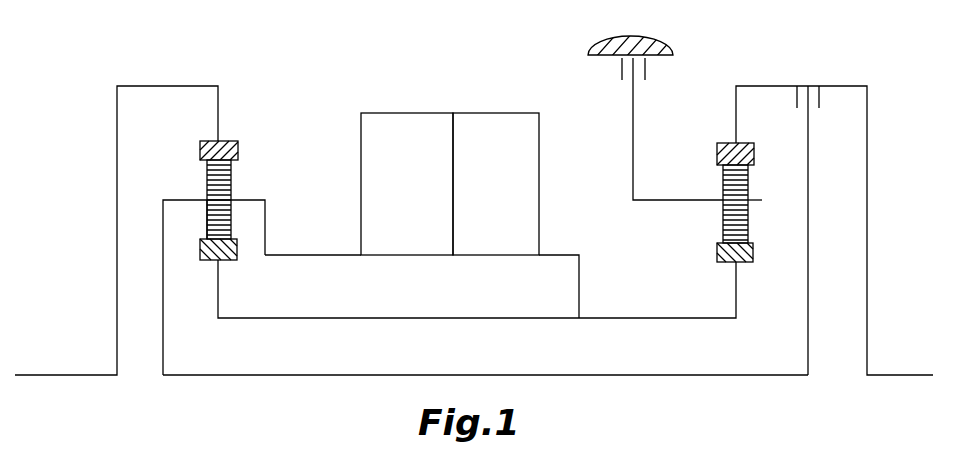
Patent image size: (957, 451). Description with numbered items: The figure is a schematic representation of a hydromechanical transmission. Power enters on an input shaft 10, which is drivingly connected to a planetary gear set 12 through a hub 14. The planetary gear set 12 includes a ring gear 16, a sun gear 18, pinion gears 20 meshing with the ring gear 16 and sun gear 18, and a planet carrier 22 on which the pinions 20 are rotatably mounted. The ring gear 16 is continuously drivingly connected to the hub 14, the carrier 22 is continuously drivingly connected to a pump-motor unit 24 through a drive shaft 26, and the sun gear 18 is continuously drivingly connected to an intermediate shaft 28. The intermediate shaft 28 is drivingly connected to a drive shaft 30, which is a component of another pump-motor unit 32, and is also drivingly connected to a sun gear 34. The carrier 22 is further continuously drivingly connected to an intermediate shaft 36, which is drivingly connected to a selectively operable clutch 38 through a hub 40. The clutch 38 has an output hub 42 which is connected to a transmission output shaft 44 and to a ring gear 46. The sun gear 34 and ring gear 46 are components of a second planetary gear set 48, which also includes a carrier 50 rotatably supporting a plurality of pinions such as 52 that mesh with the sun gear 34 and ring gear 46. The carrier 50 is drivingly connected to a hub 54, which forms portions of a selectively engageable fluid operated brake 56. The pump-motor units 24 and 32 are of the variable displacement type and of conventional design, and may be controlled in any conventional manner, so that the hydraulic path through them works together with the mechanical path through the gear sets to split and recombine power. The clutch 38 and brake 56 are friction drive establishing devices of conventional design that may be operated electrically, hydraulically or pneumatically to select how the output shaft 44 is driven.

The input shaft 10 is at (108, 378).
The planetary gear set 12 is at (239, 190).
The hub 14 is at (117, 148).
The ring gear 16 is at (238, 146).
The sun gear 18 is at (232, 250).
The pinion gears 20 is at (207, 210).
The planet carrier 22 is at (163, 226).
The pump-motor unit 24 is at (386, 124).
The drive shaft 26 is at (343, 255).
The intermediate shaft 28 is at (375, 319).
The drive shaft 30 is at (557, 255).
The pump-motor unit 32 is at (496, 126).
The sun gear 34 is at (718, 256).
The intermediate shaft 36 is at (268, 378).
The clutch 38 is at (831, 110).
The hub 40 is at (808, 286).
The output hub 42 is at (833, 86).
The transmission output shaft 44 is at (912, 378).
The ring gear 46 is at (726, 143).
The planetary gear set 48 is at (732, 196).
The carrier 50 is at (700, 203).
The pinions 52 is at (749, 193).
The hub 54 is at (633, 169).
The brake 56 is at (652, 34).